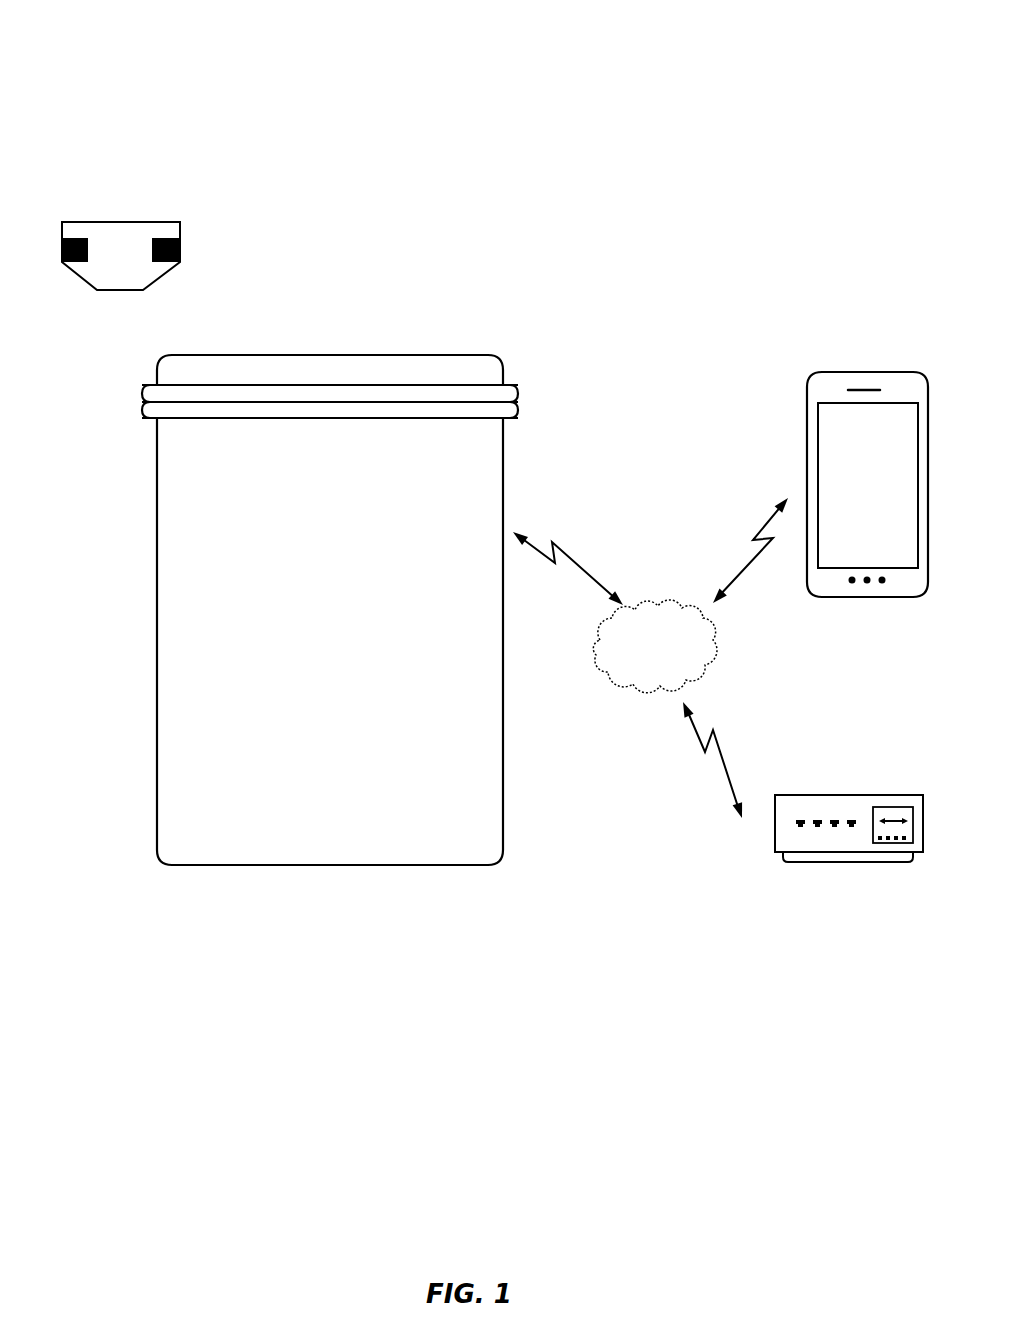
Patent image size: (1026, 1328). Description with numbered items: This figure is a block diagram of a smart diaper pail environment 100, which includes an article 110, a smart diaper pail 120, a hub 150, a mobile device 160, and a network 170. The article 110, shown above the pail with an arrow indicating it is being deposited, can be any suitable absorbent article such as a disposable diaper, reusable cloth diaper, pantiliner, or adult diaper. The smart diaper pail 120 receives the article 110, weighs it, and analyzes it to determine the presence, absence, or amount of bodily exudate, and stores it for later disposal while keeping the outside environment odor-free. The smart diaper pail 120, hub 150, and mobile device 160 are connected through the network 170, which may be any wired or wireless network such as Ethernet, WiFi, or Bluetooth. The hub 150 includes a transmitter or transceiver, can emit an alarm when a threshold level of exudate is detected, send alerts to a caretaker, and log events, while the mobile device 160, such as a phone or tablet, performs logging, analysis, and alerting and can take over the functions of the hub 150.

The smart diaper pail environment 100 is at (43, 35).
The article 110 is at (266, 314).
The smart diaper pail 120 is at (336, 587).
The hub 150 is at (843, 895).
The mobile device 160 is at (881, 497).
The network 170 is at (669, 655).